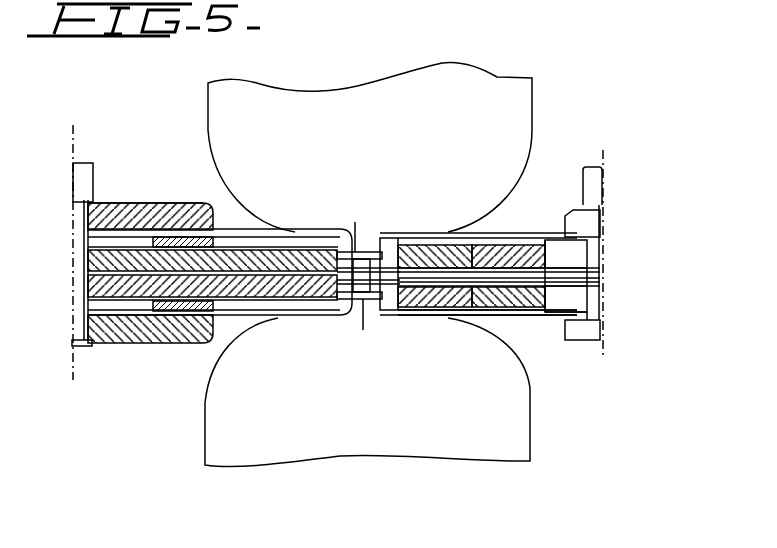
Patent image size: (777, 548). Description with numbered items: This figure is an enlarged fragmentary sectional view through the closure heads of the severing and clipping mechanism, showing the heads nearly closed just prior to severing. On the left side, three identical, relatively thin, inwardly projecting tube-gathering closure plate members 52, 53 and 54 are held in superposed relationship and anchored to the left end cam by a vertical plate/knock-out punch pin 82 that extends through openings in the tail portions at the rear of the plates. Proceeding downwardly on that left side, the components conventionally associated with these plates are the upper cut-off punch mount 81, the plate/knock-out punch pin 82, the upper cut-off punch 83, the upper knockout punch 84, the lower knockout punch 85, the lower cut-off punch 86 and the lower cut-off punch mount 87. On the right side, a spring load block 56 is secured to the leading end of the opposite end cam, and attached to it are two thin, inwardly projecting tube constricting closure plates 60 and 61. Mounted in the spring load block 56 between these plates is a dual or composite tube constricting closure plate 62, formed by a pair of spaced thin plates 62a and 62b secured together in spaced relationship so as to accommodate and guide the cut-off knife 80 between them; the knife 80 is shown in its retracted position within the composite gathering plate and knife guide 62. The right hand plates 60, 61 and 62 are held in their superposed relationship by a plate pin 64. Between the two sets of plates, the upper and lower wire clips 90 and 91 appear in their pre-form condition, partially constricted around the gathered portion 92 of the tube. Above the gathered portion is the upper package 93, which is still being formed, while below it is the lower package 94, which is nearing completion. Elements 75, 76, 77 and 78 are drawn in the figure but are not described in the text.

The tube-gathering closure plate member 52 is at (198, 212).
The tube-gathering closure plate member 53 is at (146, 267).
The tube-gathering closure plate member 54 is at (242, 318).
The spring load block 56 is at (582, 350).
The tube constricting closure plate 60 is at (519, 241).
The tube constricting closure plate 61 is at (517, 325).
The composite tube constricting closure plate 62 is at (599, 268).
The thin plate 62a is at (562, 266).
The thin plate 62b is at (556, 284).
The plate pin 64 is at (604, 165).
The insulator block 75 is at (448, 243).
The upper clamp 76 is at (568, 237).
The lower sleeve 77 is at (457, 322).
The lower clamp 78 is at (582, 341).
The cut-off knife 80 is at (552, 305).
The upper cut-off punch mount 81 is at (138, 200).
The plate/knock-out punch pin 82 is at (80, 158).
The upper cut-off punch 83 is at (108, 221).
The upper knockout punch 84 is at (102, 240).
The lower knockout punch 85 is at (224, 305).
The lower cut-off punch 86 is at (178, 318).
The lower cut-off punch mount 87 is at (84, 345).
The upper wire clip 90 is at (356, 250).
The lower wire clip 91 is at (358, 300).
The gathered portion 92 is at (374, 300).
The upper package 93 is at (492, 80).
The lower package 94 is at (512, 462).